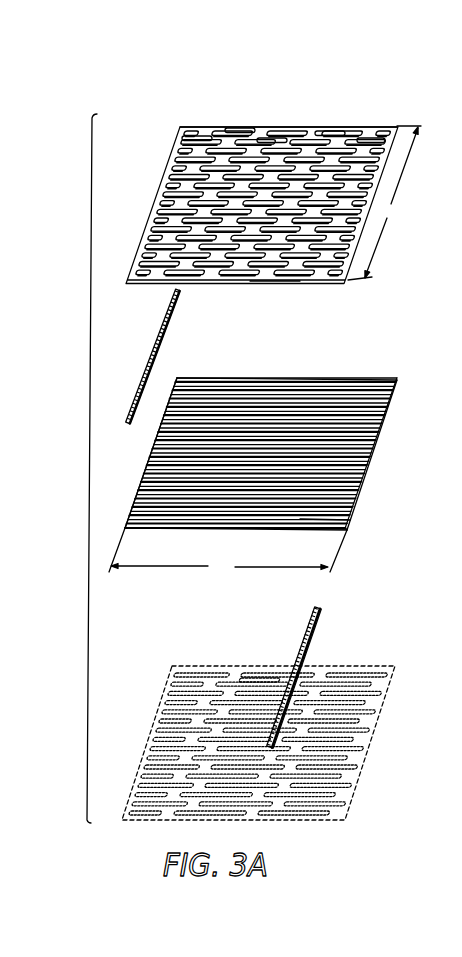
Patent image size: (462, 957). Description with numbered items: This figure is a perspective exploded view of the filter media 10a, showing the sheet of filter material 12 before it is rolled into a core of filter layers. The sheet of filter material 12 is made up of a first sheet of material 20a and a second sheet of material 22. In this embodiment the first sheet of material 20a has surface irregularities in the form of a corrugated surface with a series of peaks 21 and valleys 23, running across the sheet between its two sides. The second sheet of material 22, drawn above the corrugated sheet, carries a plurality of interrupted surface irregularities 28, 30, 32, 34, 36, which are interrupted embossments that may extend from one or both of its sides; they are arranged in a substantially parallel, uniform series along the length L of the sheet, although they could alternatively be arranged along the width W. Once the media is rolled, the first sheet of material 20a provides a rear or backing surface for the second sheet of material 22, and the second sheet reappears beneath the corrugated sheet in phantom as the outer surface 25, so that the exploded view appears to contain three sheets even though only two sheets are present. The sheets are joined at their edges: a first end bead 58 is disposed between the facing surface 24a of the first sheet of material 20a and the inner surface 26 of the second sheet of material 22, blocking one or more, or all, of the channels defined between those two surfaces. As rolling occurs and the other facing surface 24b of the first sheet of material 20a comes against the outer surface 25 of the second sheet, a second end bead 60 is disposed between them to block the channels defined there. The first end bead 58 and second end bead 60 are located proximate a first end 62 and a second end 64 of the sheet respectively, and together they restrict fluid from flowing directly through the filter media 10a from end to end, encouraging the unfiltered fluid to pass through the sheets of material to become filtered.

The filter media 10a is at (342, 77).
The sheet of filter material 12 is at (91, 415).
The second sheet of material 22 is at (183, 124).
The inner surface 26 is at (273, 287).
The interrupted surface irregularity 28 is at (182, 138).
The interrupted surface irregularity 30 is at (257, 140).
The interrupted surface irregularity 32 is at (357, 140).
The interrupted surface irregularity 34 is at (225, 130).
The interrupted surface irregularity 36 is at (315, 133).
The length L is at (384, 203).
The width W is at (228, 555).
The first end bead 58 is at (158, 327).
The second end bead 60 is at (300, 647).
The first sheet of material 20a is at (263, 530).
The facing surface 24a is at (328, 381).
The other facing surface 24b is at (190, 532).
The first end 62 is at (133, 497).
The second end 64 is at (367, 480).
The peak 21 is at (347, 528).
The valley 23 is at (355, 502).
The outer surface 25 is at (390, 690).